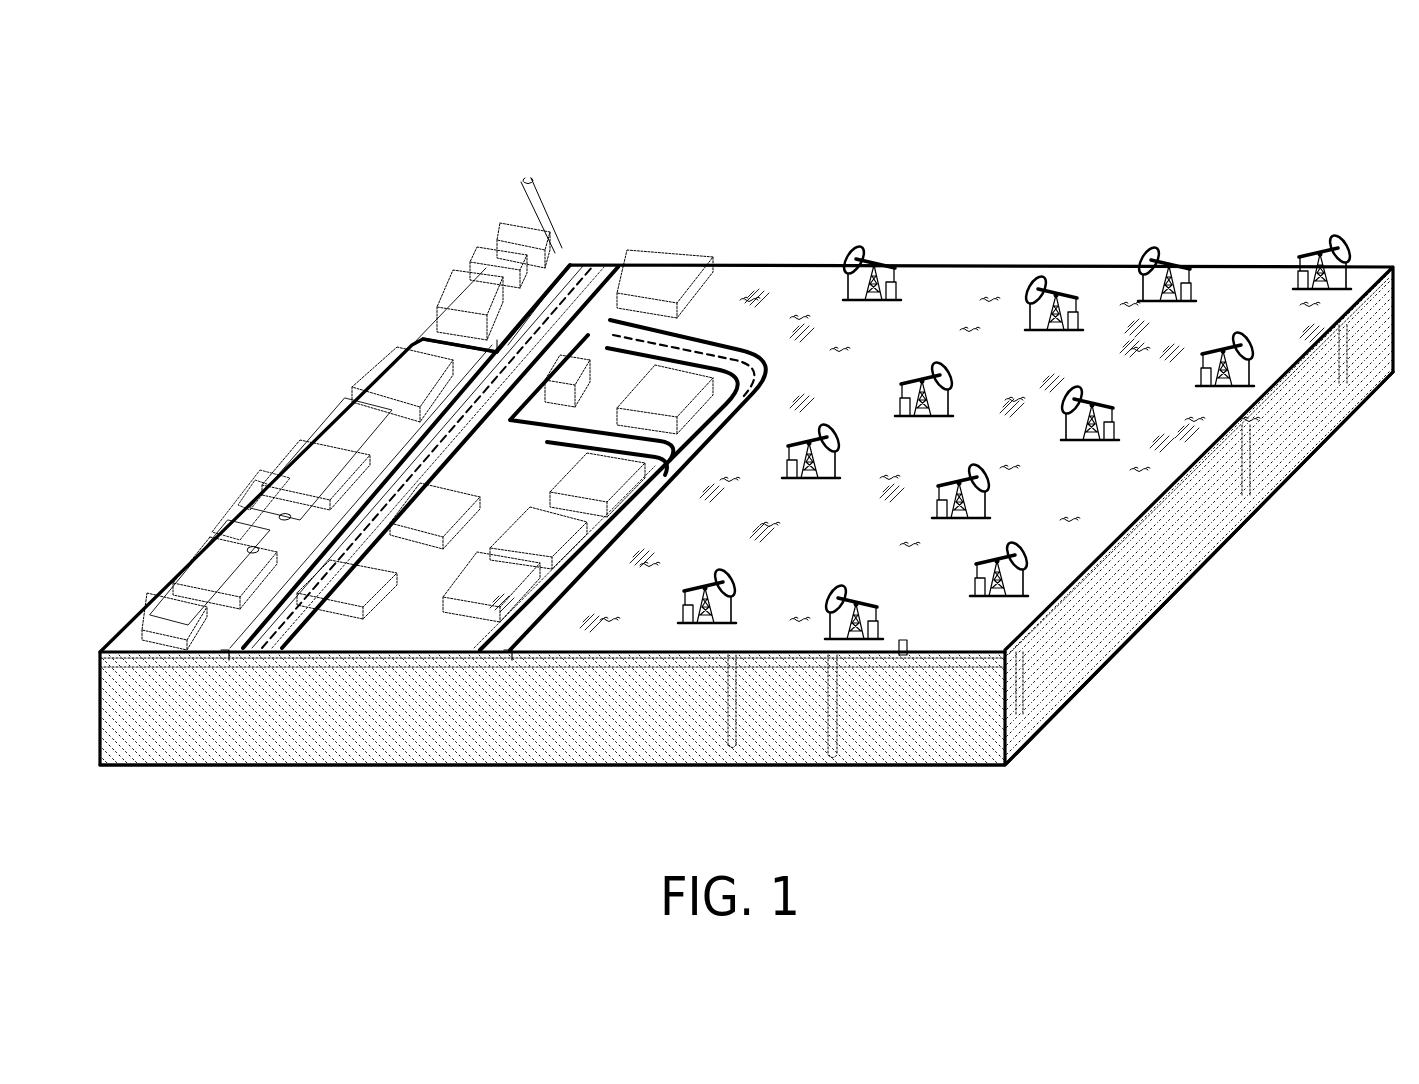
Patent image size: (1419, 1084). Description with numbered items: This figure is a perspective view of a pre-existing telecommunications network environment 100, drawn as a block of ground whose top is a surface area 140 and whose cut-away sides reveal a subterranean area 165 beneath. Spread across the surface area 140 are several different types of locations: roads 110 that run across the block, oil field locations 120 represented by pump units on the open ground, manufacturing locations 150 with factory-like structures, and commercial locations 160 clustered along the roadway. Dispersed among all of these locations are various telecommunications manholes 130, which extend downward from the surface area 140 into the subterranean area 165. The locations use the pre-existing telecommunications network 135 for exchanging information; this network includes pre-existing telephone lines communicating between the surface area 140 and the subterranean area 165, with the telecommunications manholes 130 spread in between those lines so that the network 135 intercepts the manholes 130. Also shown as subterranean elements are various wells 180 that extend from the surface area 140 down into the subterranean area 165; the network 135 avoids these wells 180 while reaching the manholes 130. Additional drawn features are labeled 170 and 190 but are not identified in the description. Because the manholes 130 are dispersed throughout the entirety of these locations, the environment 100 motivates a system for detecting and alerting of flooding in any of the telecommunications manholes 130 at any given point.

The pre-existing telecommunications network environment 100 is at (1123, 174).
The roads 110 is at (604, 252).
The oil field locations 120 is at (864, 250).
The telecommunications manholes 130 is at (937, 320).
The pre-existing telecommunications network 135 is at (583, 668).
The surface area 140 is at (1219, 313).
The manufacturing locations 150 is at (440, 275).
The commercial locations 160 is at (262, 484).
The subterranean area 165 is at (967, 733).
The subsurface region 170 is at (1022, 679).
The wells 180 is at (732, 728).
The buildings 190 is at (455, 610).